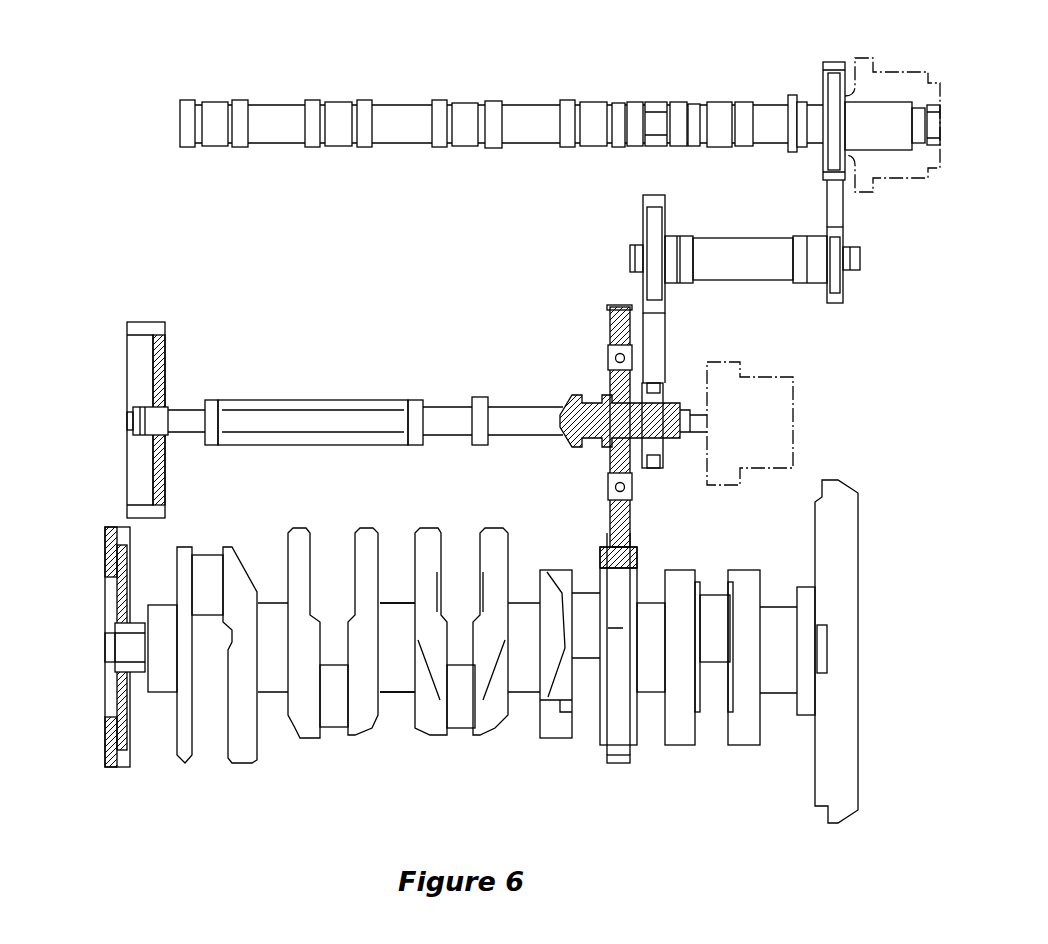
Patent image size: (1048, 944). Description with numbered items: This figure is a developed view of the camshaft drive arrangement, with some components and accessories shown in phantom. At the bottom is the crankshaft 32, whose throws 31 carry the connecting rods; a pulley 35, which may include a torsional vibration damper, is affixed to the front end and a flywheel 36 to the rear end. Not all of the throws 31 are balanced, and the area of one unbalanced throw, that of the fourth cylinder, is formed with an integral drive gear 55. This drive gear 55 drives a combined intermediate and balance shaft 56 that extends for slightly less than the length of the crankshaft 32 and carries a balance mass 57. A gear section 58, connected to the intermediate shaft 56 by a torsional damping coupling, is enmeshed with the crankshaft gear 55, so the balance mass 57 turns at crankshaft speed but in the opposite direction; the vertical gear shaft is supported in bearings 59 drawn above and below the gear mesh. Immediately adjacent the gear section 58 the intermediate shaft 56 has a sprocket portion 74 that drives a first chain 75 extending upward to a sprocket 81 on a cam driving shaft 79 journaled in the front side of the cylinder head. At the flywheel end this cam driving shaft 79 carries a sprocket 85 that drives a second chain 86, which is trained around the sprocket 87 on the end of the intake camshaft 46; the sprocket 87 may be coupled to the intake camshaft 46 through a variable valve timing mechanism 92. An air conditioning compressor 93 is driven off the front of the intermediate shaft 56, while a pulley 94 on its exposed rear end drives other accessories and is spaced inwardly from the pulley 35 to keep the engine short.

The intake camshaft 46 is at (528, 101).
The sprocket 87 is at (830, 63).
The variable valve timing mechanism 92 is at (941, 92).
The second chain 86 is at (846, 214).
The sprocket 81 is at (655, 197).
The cam driving shaft 79 is at (748, 272).
The sprocket 85 is at (838, 304).
The chain 75 is at (668, 362).
The sprocket portion 74 is at (651, 470).
The gear section 58 is at (622, 304).
The bearing 59 is at (609, 358).
The intermediate shaft 56 is at (446, 405).
The balance mass 57 is at (312, 407).
The pulley 94 is at (167, 352).
The air conditioning compressor 93 is at (794, 390).
The flywheel 36 is at (860, 520).
The pulley 35 is at (100, 593).
The throws 31 is at (207, 553).
The crankshaft 32 is at (399, 695).
The drive gear 55 is at (617, 768).